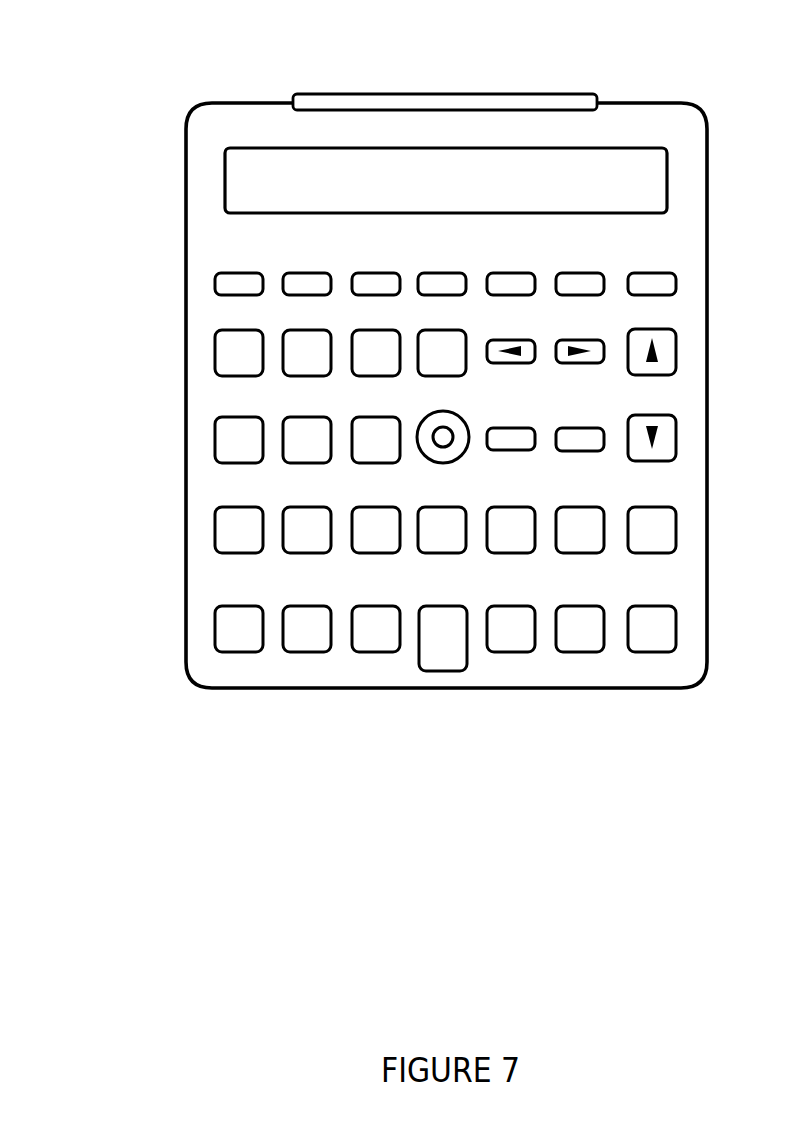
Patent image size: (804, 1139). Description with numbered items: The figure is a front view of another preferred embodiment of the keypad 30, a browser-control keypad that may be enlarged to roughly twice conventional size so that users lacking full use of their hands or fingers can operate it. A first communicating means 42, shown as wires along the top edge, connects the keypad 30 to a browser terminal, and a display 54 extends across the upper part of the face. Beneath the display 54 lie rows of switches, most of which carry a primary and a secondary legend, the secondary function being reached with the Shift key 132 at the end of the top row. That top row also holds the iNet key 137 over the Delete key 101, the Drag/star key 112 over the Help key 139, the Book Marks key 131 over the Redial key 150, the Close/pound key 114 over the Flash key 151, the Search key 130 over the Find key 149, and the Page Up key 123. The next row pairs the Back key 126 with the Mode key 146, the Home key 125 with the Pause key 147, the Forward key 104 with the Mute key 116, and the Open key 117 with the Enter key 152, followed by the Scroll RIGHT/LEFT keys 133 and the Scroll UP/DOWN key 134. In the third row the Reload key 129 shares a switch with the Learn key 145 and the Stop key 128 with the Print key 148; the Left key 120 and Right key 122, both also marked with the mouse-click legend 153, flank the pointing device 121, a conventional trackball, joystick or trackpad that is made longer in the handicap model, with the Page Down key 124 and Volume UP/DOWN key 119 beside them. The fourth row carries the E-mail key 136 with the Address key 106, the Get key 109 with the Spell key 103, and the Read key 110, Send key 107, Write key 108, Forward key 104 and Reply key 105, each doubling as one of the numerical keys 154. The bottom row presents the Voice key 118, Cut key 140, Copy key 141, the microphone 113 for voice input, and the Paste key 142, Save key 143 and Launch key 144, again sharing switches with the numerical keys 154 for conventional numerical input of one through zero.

The keypad 30 is at (173, 39).
The first communicating means 42 is at (527, 93).
The display 54 is at (446, 180).
The Delete key 101 is at (239, 286).
The Spell key 103 is at (307, 530).
The Forward key 104 is at (478, 441).
The Reply key 105 is at (652, 530).
The Address key 106 is at (239, 530).
The Send key 107 is at (442, 530).
The Write key 108 is at (511, 530).
The Get key 109 is at (307, 530).
The Read key 110 is at (376, 530).
The Drag/star key 112 is at (307, 286).
The microphone 113 is at (443, 638).
The Close/pound key 114 is at (442, 286).
The Mute key 116 is at (376, 353).
The Open key 117 is at (442, 353).
The Voice key 118 is at (239, 629).
The Volume UP/DOWN key 119 is at (659, 421).
The Left key 120 is at (376, 440).
The pointing device 121 is at (443, 425).
The Right key 122 is at (511, 438).
The Page Up key 123 is at (580, 272).
The Page Down key 124 is at (580, 439).
The Home key 125 is at (307, 353).
The Back key 126 is at (239, 353).
The Stop key 128 is at (307, 440).
The Reload key 129 is at (239, 440).
The Search key 130 is at (511, 286).
The Book Marks key 131 is at (376, 286).
The Shift key 132 is at (652, 271).
The Scroll RIGHT/LEFT key 133 is at (545, 339).
The Scroll UP/DOWN key 134 is at (639, 368).
The E-mail key 136 is at (239, 530).
The iNet key 137 is at (239, 286).
The Help key 139 is at (307, 286).
The Cut key 140 is at (307, 629).
The Copy key 141 is at (376, 629).
The Paste key 142 is at (511, 629).
The Save key 143 is at (580, 629).
The Launch key 144 is at (652, 629).
The Learn key 145 is at (239, 440).
The Mode key 146 is at (239, 353).
The Pause key 147 is at (307, 353).
The Print key 148 is at (307, 440).
The Find key 149 is at (511, 286).
The Redial key 150 is at (376, 286).
The Flash key 151 is at (442, 286).
The Enter key 152 is at (442, 353).
The left and right mouse click legend 153 is at (376, 440).
The numerical keys 154 is at (445, 579).